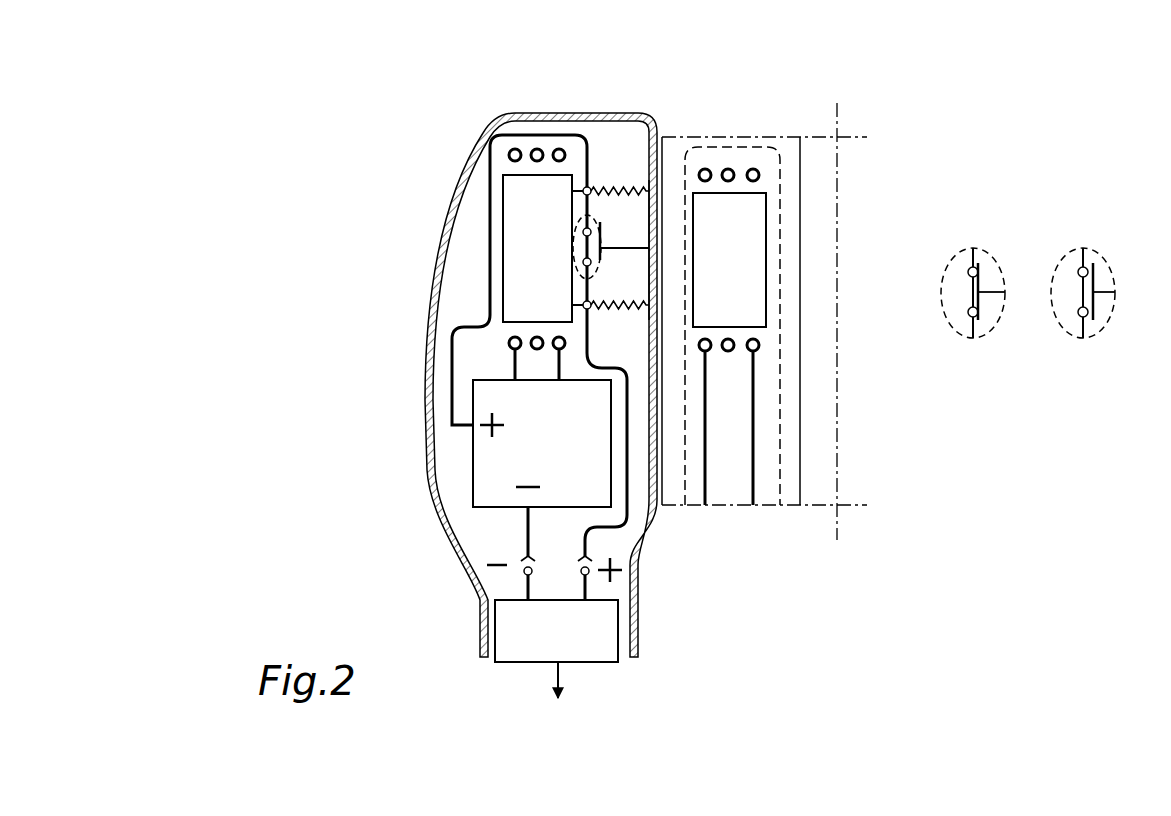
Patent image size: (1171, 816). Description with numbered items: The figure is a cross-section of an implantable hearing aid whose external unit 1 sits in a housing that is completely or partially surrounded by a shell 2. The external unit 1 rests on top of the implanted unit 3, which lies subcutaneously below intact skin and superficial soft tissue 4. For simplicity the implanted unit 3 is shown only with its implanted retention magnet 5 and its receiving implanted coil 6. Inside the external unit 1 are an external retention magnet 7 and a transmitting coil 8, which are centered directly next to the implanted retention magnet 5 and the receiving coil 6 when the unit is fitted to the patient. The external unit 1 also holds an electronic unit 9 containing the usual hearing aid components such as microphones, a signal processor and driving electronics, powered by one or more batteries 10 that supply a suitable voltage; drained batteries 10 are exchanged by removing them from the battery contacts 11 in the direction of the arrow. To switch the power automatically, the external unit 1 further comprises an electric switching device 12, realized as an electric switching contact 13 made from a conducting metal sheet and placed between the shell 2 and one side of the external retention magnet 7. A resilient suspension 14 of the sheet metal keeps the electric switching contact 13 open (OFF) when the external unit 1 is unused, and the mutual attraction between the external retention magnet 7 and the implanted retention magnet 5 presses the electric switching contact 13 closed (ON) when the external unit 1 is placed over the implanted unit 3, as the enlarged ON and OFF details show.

The external unit 1 is at (428, 136).
The shell 2 is at (514, 110).
The implanted unit 3 is at (726, 141).
The skin and superficial soft tissue 4 is at (672, 167).
The implanted retention magnet 5 is at (729, 349).
The receiving implanted coil 6 is at (766, 161).
The external retention magnet 7 is at (545, 248).
The transmitting coil 8 is at (566, 140).
The electronic unit 9 is at (542, 447).
The battery 10 is at (525, 640).
The battery contacts 11 is at (583, 562).
The electric switching device 12 is at (632, 172).
The electric switching contact 13 is at (601, 264).
The resilient suspension 14 is at (622, 185).